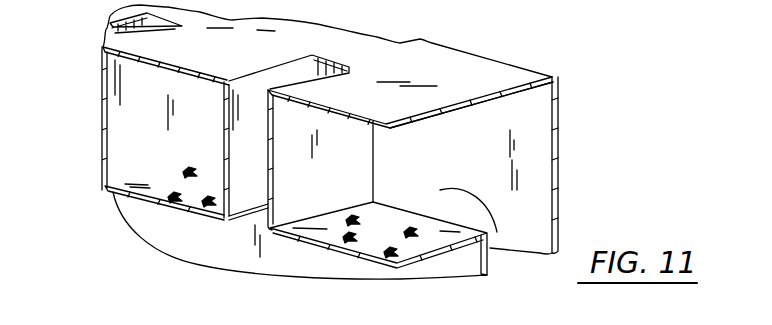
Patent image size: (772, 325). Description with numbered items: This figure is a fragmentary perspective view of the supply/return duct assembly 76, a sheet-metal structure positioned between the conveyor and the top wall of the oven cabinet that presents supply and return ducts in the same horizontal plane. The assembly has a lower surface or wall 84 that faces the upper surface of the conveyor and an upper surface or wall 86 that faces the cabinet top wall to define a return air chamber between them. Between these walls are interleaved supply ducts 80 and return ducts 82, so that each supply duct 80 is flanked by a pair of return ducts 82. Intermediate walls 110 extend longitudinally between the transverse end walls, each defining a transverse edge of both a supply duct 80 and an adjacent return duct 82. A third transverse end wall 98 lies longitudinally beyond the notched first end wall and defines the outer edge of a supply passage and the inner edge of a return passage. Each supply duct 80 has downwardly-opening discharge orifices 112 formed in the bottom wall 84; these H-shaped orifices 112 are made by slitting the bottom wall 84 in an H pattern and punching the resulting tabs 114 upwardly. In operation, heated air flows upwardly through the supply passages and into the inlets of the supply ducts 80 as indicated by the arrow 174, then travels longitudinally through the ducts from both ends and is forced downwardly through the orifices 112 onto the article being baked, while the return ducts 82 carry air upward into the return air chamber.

The supply/return duct assembly 76 is at (492, 60).
The return duct 82 is at (250, 100).
The upper surface or wall 86 is at (530, 72).
The third transverse end wall 98 is at (560, 120).
The intermediate wall 110 is at (102, 92).
The supply duct 80 is at (143, 105).
The lower surface or wall 84 is at (137, 202).
The tab 114 is at (175, 165).
The discharge orifice 112 is at (174, 196).
The arrow 174 is at (432, 193).